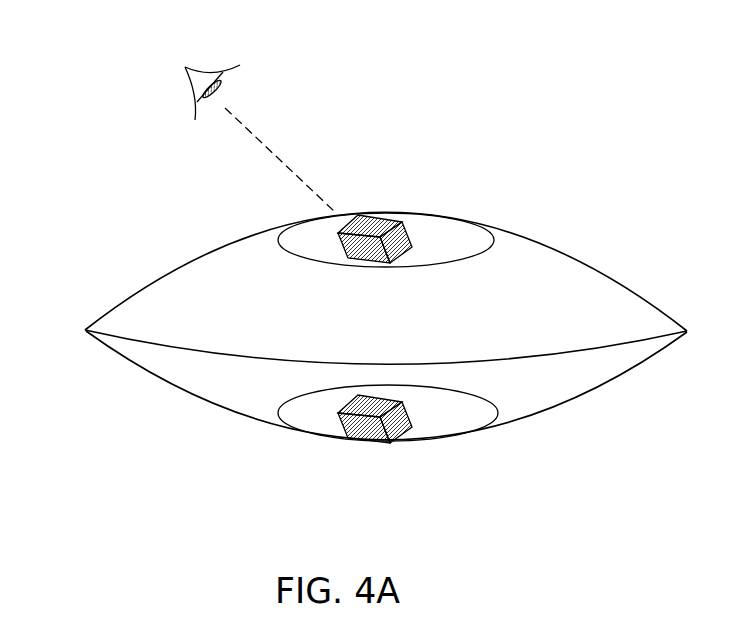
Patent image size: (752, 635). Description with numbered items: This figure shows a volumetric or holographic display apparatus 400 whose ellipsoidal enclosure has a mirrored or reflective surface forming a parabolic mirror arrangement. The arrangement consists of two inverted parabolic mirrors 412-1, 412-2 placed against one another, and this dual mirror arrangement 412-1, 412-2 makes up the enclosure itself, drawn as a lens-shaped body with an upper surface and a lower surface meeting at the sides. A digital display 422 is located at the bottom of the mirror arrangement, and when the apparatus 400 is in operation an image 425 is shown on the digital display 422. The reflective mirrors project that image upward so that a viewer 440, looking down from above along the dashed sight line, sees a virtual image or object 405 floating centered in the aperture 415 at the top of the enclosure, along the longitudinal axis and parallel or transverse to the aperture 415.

The volumetric or holographic display apparatus 400 is at (363, 304).
The virtual image or object 405 is at (390, 203).
The inverted parabolic mirror 412-1 is at (185, 295).
The inverted parabolic mirror 412-2 is at (181, 374).
The aperture 415 is at (480, 240).
The digital display 422 is at (274, 461).
The image 425 is at (321, 449).
The viewer 440 is at (158, 55).